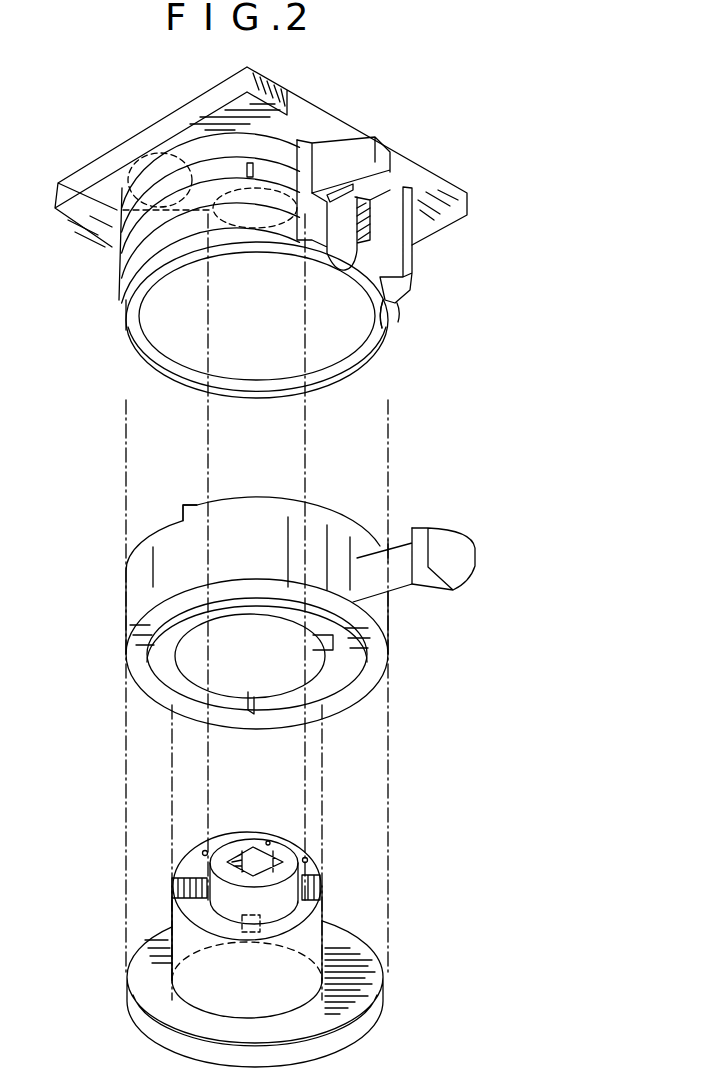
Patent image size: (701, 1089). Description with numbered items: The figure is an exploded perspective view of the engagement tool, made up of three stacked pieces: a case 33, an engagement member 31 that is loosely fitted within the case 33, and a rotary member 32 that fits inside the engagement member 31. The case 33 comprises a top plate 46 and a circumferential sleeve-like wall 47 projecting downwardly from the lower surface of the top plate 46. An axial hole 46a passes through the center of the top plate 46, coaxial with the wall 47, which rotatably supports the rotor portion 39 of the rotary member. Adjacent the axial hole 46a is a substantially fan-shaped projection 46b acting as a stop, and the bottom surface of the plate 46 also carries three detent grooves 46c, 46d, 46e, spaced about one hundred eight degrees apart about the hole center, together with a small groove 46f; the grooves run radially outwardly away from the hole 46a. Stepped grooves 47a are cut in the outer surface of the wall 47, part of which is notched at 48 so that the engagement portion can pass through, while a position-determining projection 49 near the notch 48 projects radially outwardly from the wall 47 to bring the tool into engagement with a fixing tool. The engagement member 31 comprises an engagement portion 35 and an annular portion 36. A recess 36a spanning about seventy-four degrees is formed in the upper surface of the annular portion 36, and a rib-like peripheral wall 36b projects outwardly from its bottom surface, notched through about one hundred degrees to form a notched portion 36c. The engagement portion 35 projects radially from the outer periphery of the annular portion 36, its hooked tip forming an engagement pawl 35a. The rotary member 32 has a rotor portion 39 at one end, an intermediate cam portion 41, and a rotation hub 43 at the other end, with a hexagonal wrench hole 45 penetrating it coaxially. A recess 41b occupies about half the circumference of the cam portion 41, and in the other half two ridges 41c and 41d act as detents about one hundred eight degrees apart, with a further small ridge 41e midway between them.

The case 33 is at (308, 222).
The top plate 46 is at (428, 168).
The axial hole 46a is at (260, 203).
The fan-shaped projection 46b is at (160, 172).
The detent groove 46c is at (128, 314).
The detent groove 46d is at (408, 255).
The detent groove 46e is at (255, 163).
The small groove 46f is at (400, 313).
The circumferential wall 47 is at (370, 348).
The stepped grooves 47a is at (128, 245).
The notch 48 is at (363, 267).
The position-determining projection 49 is at (368, 155).
The engagement member 31 is at (310, 600).
The engagement portion 35 is at (388, 553).
The engagement pawl 35a is at (450, 540).
The annular portion 36 is at (140, 587).
The recess 36a is at (153, 535).
The peripheral wall 36b is at (145, 636).
The notched portion 36c is at (290, 706).
The rotary member 32 is at (305, 920).
The rotor portion 39 is at (343, 1013).
The cam portion 41 is at (300, 934).
The recess 41b is at (190, 910).
The ridge 41c is at (207, 853).
The ridge 41d is at (305, 868).
The small ridge 41e is at (268, 843).
The rotation hub 43 is at (320, 910).
The wrench hole 45 is at (290, 845).